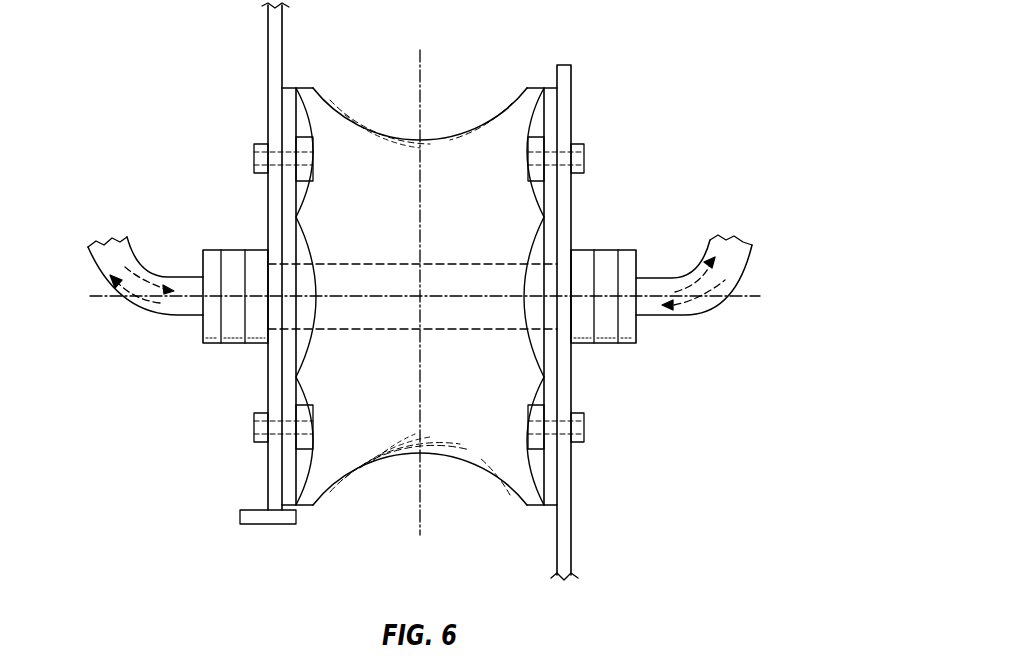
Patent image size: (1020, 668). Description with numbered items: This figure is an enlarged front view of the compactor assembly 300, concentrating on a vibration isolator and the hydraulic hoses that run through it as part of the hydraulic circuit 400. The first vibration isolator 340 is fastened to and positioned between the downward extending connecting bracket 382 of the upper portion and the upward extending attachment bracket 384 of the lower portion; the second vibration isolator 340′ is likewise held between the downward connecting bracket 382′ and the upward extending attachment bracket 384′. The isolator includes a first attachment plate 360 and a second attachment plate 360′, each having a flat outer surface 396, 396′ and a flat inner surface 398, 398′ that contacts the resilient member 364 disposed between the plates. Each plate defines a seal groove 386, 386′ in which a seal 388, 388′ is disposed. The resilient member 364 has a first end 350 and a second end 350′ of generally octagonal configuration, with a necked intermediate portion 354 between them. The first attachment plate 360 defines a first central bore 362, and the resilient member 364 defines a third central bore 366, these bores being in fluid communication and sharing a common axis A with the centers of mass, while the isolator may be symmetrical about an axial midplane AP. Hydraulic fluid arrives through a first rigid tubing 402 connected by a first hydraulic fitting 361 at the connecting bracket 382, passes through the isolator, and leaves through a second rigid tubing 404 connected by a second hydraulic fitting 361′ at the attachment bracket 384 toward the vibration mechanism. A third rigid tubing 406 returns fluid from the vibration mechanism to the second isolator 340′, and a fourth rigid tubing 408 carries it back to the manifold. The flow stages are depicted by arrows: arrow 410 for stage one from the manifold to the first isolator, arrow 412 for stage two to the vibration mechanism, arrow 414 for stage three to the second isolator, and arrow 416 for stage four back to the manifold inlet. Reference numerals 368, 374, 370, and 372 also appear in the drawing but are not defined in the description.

The compactor assembly 300 is at (711, 146).
The hydraulic circuit 400 is at (136, 94).
The first vibration isolator 340 is at (454, 75).
The second vibration isolator 340′ is at (427, 121).
The downward extending connecting bracket 382 is at (223, 263).
The downward connecting bracket 382′ is at (268, 42).
The upward extending attachment bracket 384 is at (615, 310).
The upward extending attachment bracket 384′ is at (562, 66).
The first attachment plate 360 is at (262, 253).
The second attachment plate 360′ is at (589, 266).
The outer surface 396 is at (288, 98).
The outer surface 396′ is at (572, 128).
The inner surface 398 is at (300, 115).
The inner surface 398′ is at (537, 115).
The seal groove 386 is at (213, 296).
The seal 388 is at (287, 240).
The seal groove 386′ is at (617, 296).
The seal 388′ is at (560, 242).
The first end 350 is at (302, 192).
The second end 350′ is at (535, 190).
The first central bore 362 is at (286, 278).
The resilient member 364 is at (420, 295).
The third central bore 366 is at (356, 295).
The necked intermediate portion 354 is at (462, 442).
The first hydraulic fitting 361 is at (252, 347).
The second hydraulic fitting 361′ is at (587, 347).
The first inlet 368 is at (157, 302).
The first port 374 is at (157, 302).
The first rigid tubing 402 is at (157, 302).
The fourth rigid tubing 408 is at (157, 302).
The second inlet 370 is at (758, 302).
The second port 372 is at (758, 302).
The second rigid tubing 404 is at (758, 302).
The third rigid tubing 406 is at (758, 302).
The arrow 410 is at (150, 284).
The arrow 412 is at (703, 274).
The arrow 414 is at (688, 302).
The arrow 416 is at (128, 305).
The axis A is at (188, 297).
The axial midplane AP is at (419, 515).